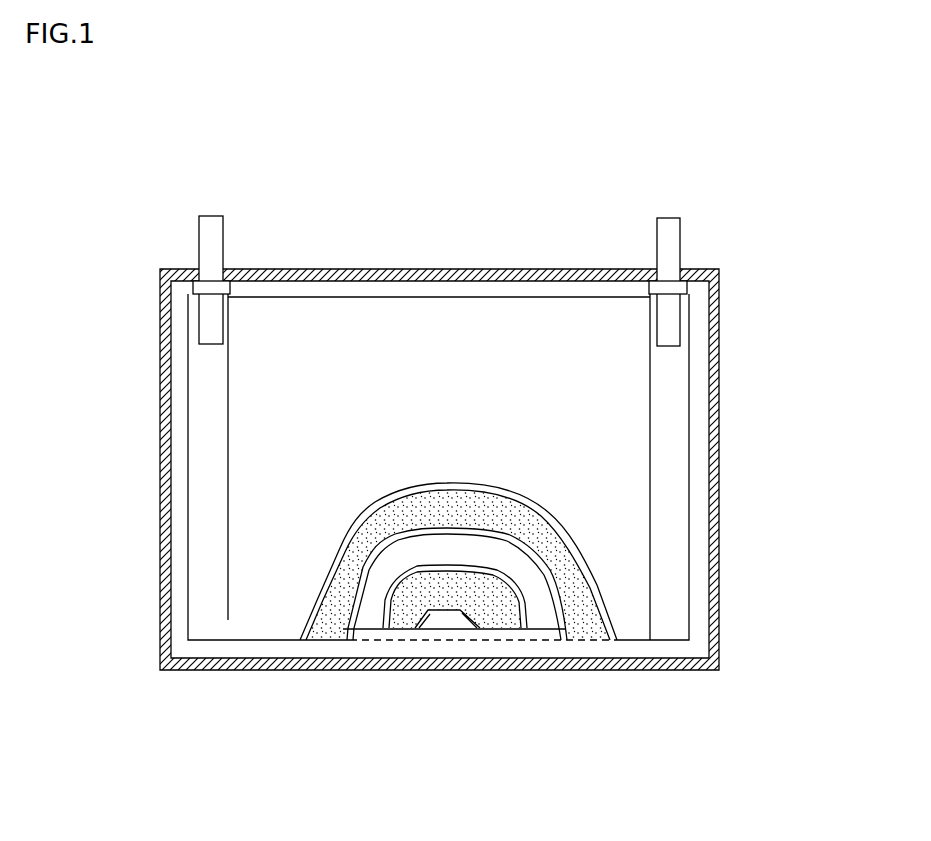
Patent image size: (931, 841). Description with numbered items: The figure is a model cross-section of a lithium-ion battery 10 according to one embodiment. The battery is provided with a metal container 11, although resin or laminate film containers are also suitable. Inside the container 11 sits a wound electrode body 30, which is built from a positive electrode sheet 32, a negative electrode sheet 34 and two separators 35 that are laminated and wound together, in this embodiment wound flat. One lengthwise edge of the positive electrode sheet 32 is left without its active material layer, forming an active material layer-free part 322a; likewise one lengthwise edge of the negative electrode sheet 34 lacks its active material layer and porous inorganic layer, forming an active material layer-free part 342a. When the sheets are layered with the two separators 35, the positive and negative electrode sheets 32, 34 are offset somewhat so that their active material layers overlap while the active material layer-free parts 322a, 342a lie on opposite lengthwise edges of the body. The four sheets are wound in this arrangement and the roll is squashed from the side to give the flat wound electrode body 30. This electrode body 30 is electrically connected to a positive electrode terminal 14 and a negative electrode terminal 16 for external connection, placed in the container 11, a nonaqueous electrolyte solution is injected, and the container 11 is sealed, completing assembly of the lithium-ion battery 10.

The lithium-ion battery 10 is at (717, 145).
The container 11 is at (721, 552).
The positive electrode terminal 14 is at (223, 233).
The negative electrode terminal 16 is at (680, 230).
The wound electrode body 30 is at (518, 318).
The positive electrode sheet 32 is at (543, 588).
The negative electrode sheet 34 is at (458, 608).
The separators 35 is at (367, 622).
The active material layer-free part 322a is at (197, 505).
The active material layer-free part 342a is at (680, 455).